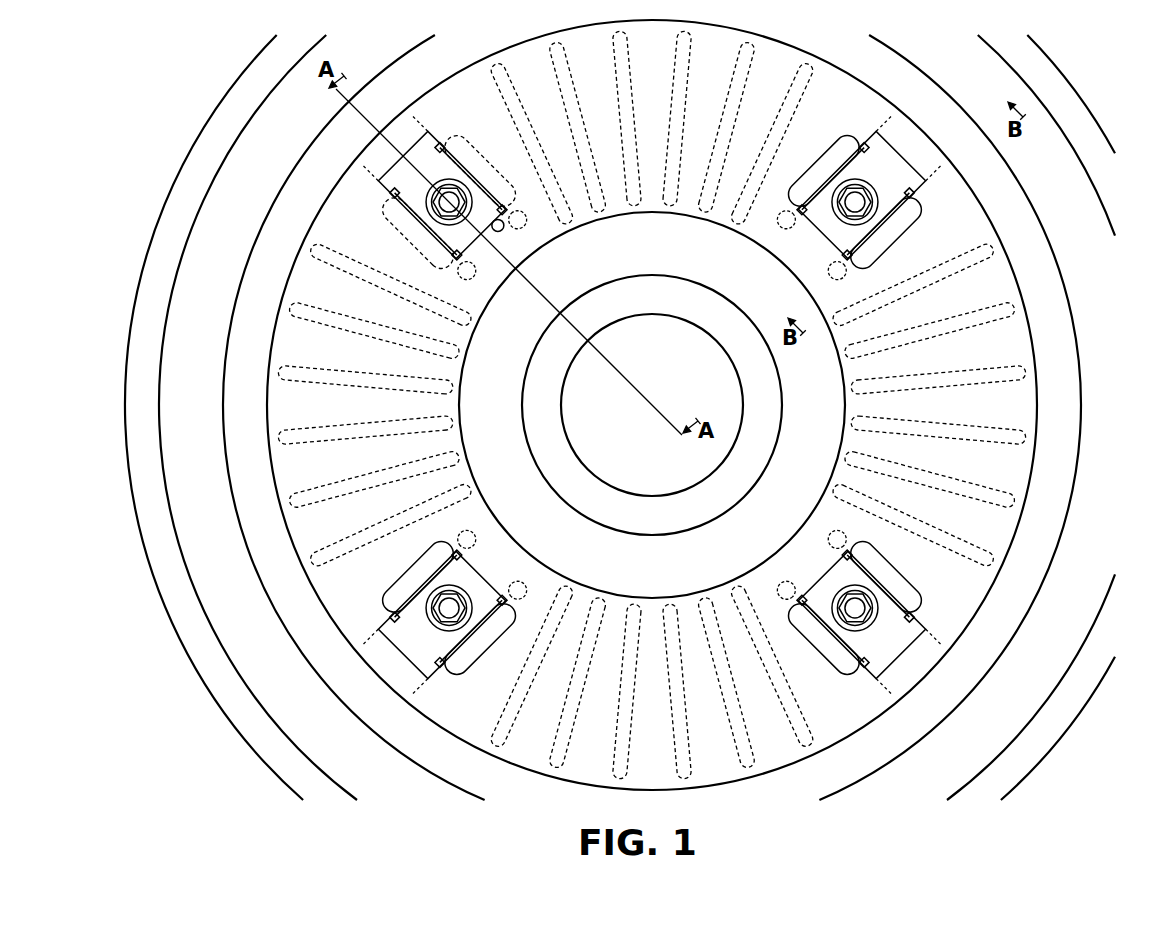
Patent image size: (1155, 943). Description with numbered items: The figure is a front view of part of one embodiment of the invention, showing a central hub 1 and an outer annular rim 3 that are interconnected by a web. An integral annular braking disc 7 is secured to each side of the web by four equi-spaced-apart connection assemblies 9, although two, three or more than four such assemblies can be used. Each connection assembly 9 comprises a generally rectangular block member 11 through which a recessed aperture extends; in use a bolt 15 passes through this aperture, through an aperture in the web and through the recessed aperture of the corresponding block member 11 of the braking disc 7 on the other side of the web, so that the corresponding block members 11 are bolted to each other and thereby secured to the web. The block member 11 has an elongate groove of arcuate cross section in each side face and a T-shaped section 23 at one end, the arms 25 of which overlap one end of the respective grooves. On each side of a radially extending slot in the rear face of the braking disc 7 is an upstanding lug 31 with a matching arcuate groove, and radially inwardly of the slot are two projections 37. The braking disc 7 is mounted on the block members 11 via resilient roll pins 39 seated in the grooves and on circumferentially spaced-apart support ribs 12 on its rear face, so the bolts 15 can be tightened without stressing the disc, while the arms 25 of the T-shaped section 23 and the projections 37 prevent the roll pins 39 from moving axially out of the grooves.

The central hub 1 is at (583, 487).
The outer annular rim 3 is at (170, 560).
The annular braking disc 7 is at (320, 290).
The connection assembly 9 is at (648, 412).
The block member 11 is at (428, 612).
The support rib 12 is at (335, 428).
The bolt 15 is at (447, 622).
The T-shaped section 23 is at (414, 640).
The arms 25 is at (378, 629).
The upstanding lug 31 is at (408, 575).
The projection 37 is at (480, 566).
The resilient roll pin 39 is at (507, 600).